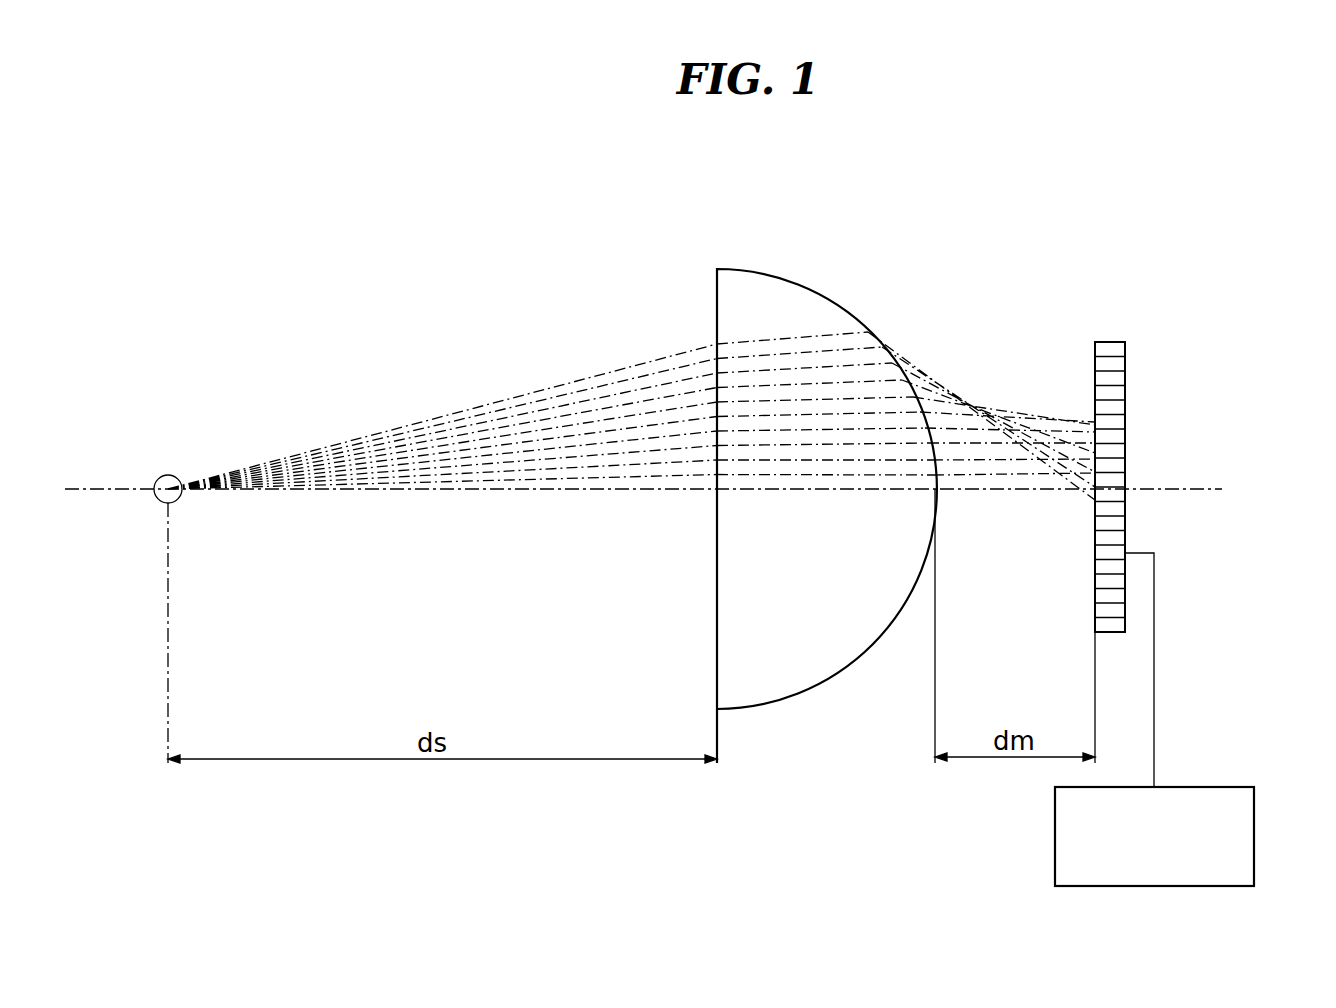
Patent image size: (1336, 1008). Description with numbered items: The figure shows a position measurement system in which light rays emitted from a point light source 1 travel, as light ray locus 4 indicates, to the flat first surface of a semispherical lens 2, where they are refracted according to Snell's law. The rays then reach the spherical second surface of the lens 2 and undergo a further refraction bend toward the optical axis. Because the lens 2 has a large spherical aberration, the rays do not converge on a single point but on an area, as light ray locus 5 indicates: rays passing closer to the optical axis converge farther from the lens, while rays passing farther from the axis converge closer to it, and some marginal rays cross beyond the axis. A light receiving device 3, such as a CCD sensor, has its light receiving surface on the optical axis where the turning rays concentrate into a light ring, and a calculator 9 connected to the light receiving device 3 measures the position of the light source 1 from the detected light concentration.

The point light source 1 is at (170, 475).
The semispherical lens 2 is at (755, 267).
The light receiving device 3 is at (1107, 342).
The light ray locus 4 is at (492, 402).
The light ray locus 5 is at (1006, 412).
The calculator 9 is at (1256, 830).